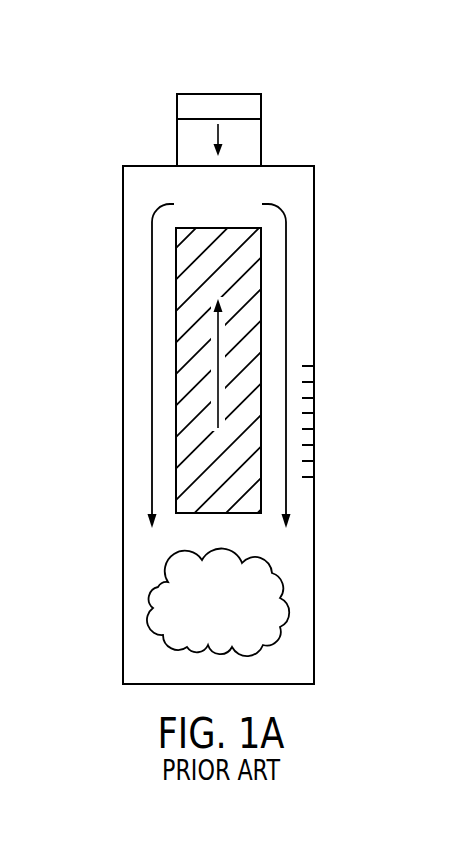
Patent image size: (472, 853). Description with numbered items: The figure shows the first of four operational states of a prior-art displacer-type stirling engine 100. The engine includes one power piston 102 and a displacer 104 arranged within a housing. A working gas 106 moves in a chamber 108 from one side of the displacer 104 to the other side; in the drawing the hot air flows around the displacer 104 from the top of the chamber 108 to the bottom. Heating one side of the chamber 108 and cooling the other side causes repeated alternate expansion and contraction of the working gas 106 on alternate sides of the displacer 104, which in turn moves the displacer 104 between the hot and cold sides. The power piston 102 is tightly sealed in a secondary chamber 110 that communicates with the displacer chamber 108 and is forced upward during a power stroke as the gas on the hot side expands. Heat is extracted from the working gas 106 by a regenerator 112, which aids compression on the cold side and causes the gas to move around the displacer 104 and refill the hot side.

The displacer-type stirling engine 100 is at (63, 35).
The power piston 102 is at (182, 107).
The displacer 104 is at (253, 282).
The working gas 106 is at (152, 362).
The chamber 108 is at (123, 548).
The secondary chamber 110 is at (182, 140).
The regenerator 112 is at (322, 365).